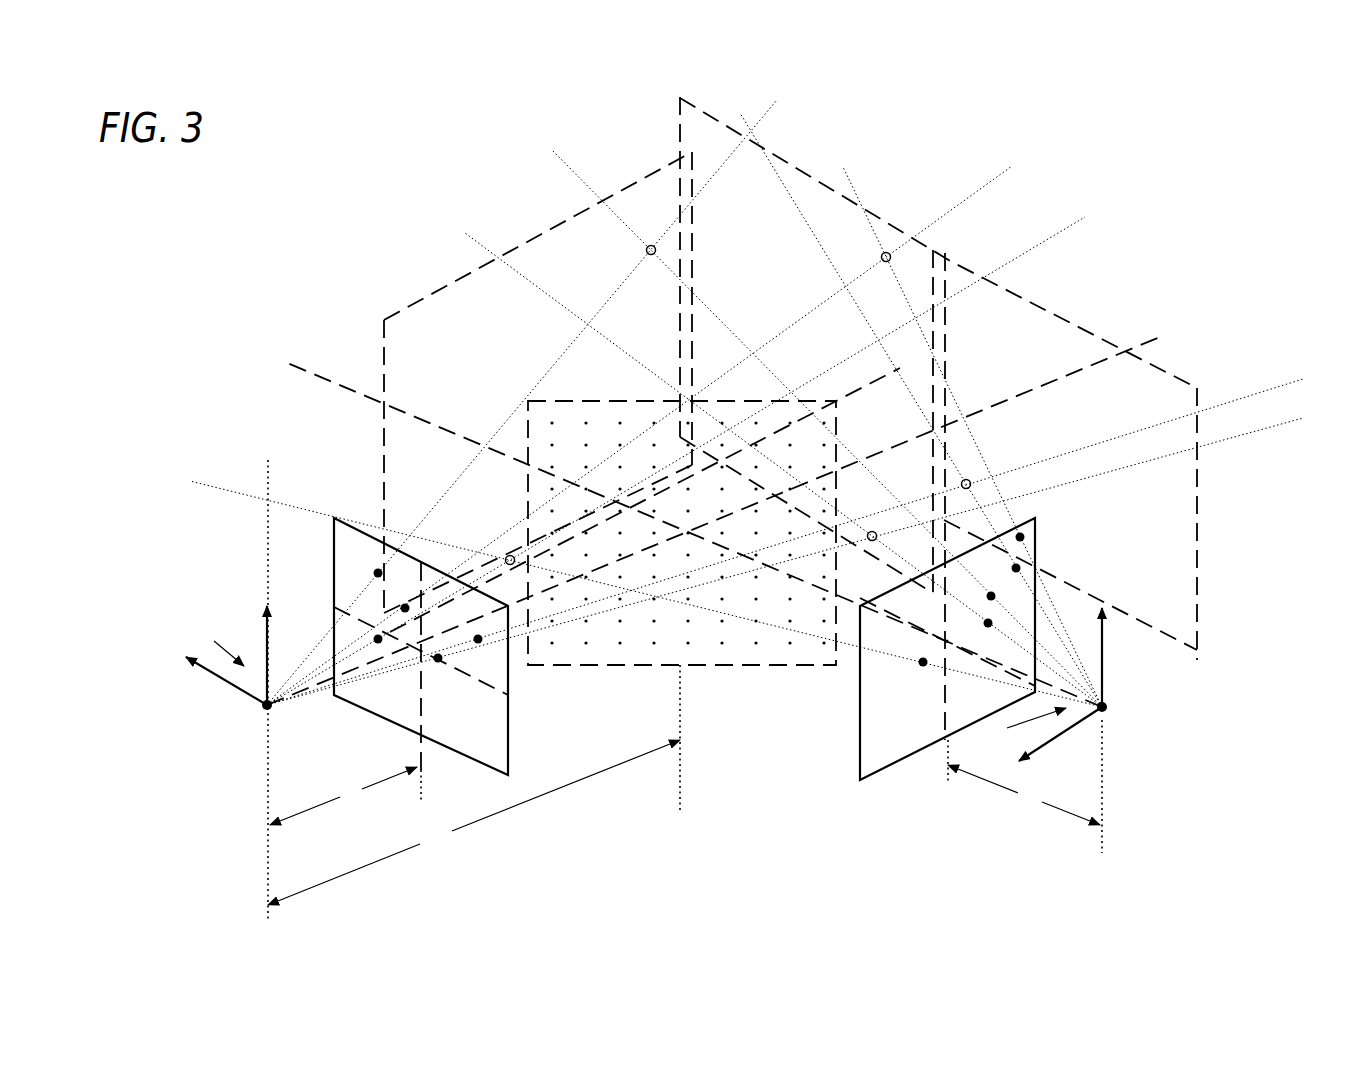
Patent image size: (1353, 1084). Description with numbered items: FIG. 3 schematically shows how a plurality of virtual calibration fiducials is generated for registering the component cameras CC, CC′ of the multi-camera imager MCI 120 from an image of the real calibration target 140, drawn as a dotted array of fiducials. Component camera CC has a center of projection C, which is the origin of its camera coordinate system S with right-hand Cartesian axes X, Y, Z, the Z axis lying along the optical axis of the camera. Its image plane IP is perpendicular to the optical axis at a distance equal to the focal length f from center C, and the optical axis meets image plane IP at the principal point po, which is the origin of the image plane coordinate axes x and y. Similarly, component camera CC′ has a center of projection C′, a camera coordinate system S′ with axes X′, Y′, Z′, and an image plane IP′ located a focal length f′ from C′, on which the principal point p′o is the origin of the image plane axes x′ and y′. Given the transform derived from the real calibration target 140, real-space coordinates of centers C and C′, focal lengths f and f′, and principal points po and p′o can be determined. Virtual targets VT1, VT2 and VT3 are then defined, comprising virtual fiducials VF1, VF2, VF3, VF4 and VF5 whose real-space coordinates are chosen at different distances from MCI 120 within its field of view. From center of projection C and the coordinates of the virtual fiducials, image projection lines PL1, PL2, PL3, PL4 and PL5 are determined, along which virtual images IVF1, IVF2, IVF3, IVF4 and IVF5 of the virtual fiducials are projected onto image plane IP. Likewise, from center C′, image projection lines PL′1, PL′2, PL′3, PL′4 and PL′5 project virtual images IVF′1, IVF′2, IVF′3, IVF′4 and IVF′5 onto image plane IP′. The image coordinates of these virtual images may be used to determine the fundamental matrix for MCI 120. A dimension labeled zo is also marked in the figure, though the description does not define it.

The calibration target 140 is at (575, 413).
The MCI 120 is at (613, 832).
The virtual target VT1 is at (697, 138).
The virtual target VT2 is at (398, 333).
The virtual target VT3 is at (1018, 320).
The Z axis of camera coordinate system Z is at (720, 508).
The Z′ axis of camera coordinate system Z′ is at (687, 524).
The image projection line PL1 is at (540, 398).
The image projection line PL2 is at (697, 455).
The image projection line PL3 is at (790, 550).
The image projection line PL4 is at (786, 530).
The image projection line PL5 is at (661, 428).
The image projection line PL′1 is at (818, 416).
The image projection line PL′2 is at (626, 588).
The image projection line PL′3 is at (762, 460).
The image projection line PL′4 is at (904, 398).
The image projection line PL′5 is at (969, 423).
The virtual fiducial VF1 is at (646, 250).
The virtual fiducial VF2 is at (508, 556).
The virtual fiducial VF3 is at (873, 531).
The virtual fiducial VF4 is at (967, 480).
The virtual fiducial VF5 is at (882, 257).
The virtual image IVF1 is at (376, 571).
The virtual image IVF2 is at (376, 637).
The virtual image IVF3 is at (480, 643).
The virtual image IVF4 is at (439, 662).
The virtual image IVF5 is at (403, 606).
The virtual image IVF′1 is at (994, 596).
The virtual image IVF′2 is at (922, 666).
The virtual image IVF′3 is at (991, 623).
The virtual image IVF′4 is at (1019, 568).
The virtual image IVF′5 is at (1023, 537).
The image plane IP is at (495, 727).
The image plane IP′ is at (873, 727).
The center of projection C is at (264, 707).
The center of projection C′ is at (1105, 709).
The component camera CC is at (227, 800).
The component camera CC′ is at (1135, 800).
The camera coordinate system S is at (220, 641).
The camera coordinate system S′ is at (1027, 728).
The X axis of camera coordinate system X is at (226, 681).
The Y axis of camera coordinate system Y is at (276, 655).
The X′ axis of camera coordinate system X′ is at (1060, 739).
The Y′ axis of camera coordinate system Y′ is at (1113, 657).
The x image plane coordinate axis x is at (421, 655).
The y image plane coordinate axis y is at (412, 679).
The x′ image plane coordinate axis x′ is at (947, 654).
The y′ image plane coordinate axis y′ is at (959, 738).
The principal point po is at (420, 653).
The principal point p′o is at (947, 645).
The focal length f is at (343, 796).
The focal length f′ is at (1024, 795).
The object distance along optical axis zo is at (474, 785).